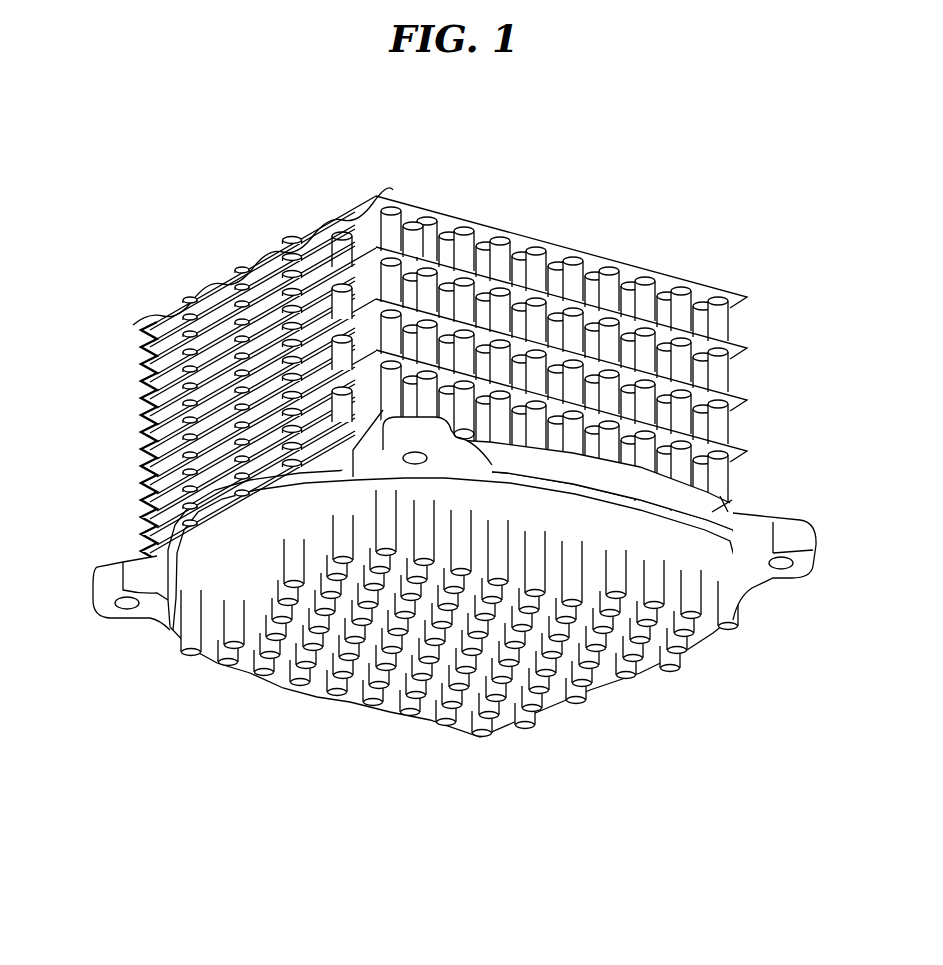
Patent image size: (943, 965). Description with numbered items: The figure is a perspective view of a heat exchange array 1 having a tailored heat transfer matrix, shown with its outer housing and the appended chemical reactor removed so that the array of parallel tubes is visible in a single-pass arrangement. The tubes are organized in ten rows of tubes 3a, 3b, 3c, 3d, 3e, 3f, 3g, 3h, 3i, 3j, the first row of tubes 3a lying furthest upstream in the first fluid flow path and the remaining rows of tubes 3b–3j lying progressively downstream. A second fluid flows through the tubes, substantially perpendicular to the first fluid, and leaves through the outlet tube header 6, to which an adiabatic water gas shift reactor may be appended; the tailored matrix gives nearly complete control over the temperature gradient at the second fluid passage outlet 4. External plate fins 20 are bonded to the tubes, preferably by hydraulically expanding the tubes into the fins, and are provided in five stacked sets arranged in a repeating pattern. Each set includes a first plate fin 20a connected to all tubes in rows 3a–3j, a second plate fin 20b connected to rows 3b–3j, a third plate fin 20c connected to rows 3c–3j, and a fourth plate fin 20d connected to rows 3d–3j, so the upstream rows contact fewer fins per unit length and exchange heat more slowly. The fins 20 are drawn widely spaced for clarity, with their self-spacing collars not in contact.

The heat exchange array 1 is at (760, 410).
The first row of tubes 3a is at (418, 220).
The second row of tubes 3b is at (366, 236).
The third row of tubes 3c is at (339, 258).
The fourth row of tubes 3d is at (639, 666).
The fifth row of tubes 3e is at (628, 682).
The sixth row of tubes 3f is at (598, 688).
The seventh row of tubes 3g is at (578, 704).
The eighth row of tubes 3h is at (538, 712).
The ninth row of tubes 3i is at (527, 730).
The tenth row of tubes 3j is at (482, 742).
The second fluid passage outlet 4 is at (287, 688).
The outlet tube header 6 is at (725, 505).
The plate fins 20 is at (205, 374).
The first plate fin 20a is at (140, 372).
The second plate fin 20b is at (140, 388).
The third plate fin 20c is at (140, 398).
The fourth plate fin 20d is at (140, 412).